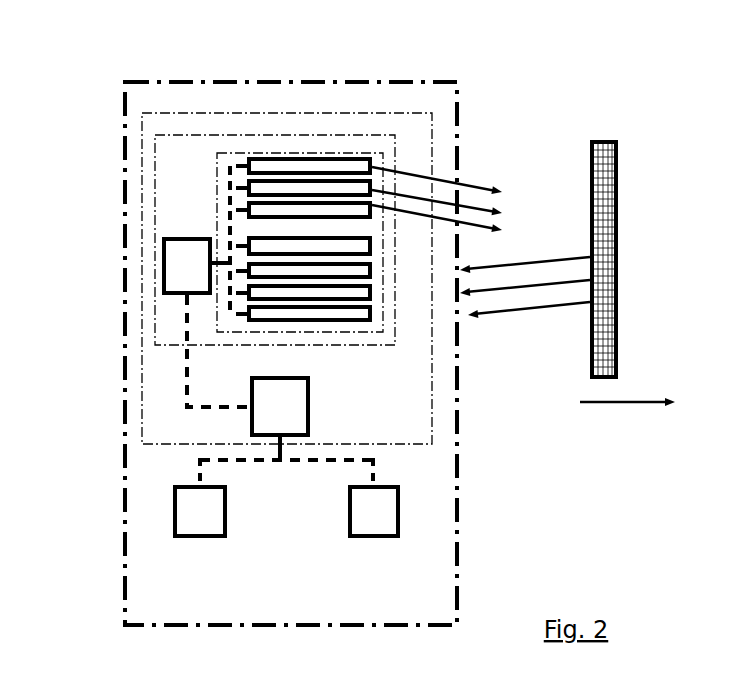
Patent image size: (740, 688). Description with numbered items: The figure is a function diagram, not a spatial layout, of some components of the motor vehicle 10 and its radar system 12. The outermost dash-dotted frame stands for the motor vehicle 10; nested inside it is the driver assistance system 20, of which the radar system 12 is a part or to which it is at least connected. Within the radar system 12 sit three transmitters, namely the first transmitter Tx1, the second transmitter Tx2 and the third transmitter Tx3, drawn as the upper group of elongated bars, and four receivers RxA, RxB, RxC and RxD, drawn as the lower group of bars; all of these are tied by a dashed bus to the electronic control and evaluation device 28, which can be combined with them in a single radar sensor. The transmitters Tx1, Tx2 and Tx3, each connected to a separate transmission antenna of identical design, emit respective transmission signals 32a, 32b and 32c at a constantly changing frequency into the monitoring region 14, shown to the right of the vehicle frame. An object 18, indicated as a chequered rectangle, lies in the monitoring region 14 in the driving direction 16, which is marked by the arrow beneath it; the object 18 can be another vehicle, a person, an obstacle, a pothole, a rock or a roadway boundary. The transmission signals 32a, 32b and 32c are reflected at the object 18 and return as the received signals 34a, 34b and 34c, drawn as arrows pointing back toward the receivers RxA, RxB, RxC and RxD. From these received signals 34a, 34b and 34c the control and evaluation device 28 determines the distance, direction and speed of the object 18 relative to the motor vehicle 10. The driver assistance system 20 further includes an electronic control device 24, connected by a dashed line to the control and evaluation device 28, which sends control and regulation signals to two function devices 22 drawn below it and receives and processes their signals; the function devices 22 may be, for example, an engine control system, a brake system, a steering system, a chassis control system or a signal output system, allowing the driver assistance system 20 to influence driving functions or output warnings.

The motor vehicle 10 is at (118, 88).
The radar system 12 is at (150, 158).
The monitoring region 14 is at (669, 263).
The driving direction 16 is at (657, 408).
The object 18 is at (619, 315).
The driver assistance system 20 is at (135, 120).
The function devices 22 is at (286, 511).
The electronic control device 24 is at (280, 406).
The electronic control and evaluation device 28 is at (187, 266).
The transmission signal 32a is at (465, 183).
The transmission signal 32b is at (502, 194).
The transmission signal 32c is at (508, 228).
The received signal 34a is at (506, 310).
The received signal 34b is at (493, 292).
The received signal 34c is at (553, 258).
The first transmitter Tx1 is at (278, 157).
The second transmitter Tx2 is at (350, 180).
The third transmitter Tx3 is at (324, 202).
The receiver RxA is at (236, 246).
The receiver RxB is at (330, 271).
The receiver RxC is at (236, 293).
The receiver RxD is at (236, 314).